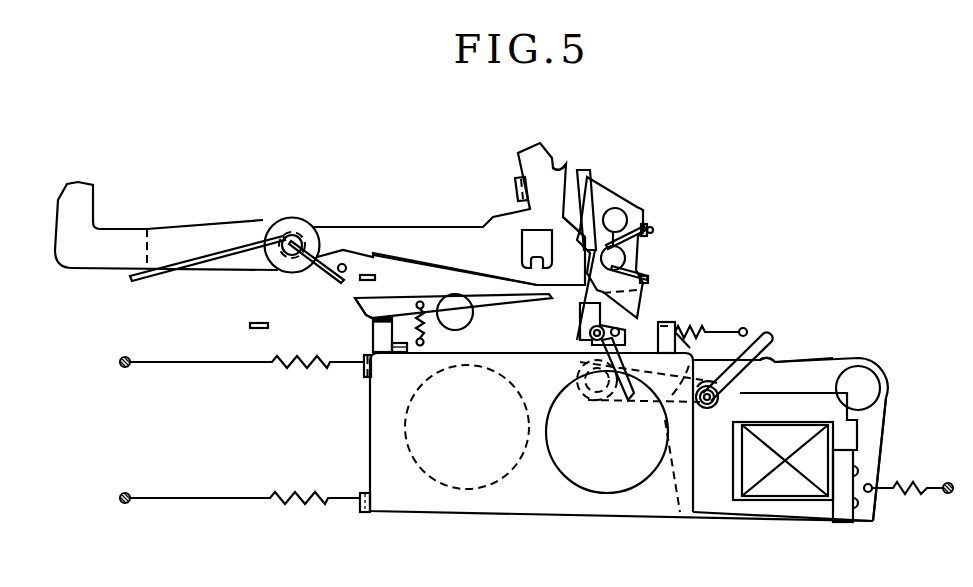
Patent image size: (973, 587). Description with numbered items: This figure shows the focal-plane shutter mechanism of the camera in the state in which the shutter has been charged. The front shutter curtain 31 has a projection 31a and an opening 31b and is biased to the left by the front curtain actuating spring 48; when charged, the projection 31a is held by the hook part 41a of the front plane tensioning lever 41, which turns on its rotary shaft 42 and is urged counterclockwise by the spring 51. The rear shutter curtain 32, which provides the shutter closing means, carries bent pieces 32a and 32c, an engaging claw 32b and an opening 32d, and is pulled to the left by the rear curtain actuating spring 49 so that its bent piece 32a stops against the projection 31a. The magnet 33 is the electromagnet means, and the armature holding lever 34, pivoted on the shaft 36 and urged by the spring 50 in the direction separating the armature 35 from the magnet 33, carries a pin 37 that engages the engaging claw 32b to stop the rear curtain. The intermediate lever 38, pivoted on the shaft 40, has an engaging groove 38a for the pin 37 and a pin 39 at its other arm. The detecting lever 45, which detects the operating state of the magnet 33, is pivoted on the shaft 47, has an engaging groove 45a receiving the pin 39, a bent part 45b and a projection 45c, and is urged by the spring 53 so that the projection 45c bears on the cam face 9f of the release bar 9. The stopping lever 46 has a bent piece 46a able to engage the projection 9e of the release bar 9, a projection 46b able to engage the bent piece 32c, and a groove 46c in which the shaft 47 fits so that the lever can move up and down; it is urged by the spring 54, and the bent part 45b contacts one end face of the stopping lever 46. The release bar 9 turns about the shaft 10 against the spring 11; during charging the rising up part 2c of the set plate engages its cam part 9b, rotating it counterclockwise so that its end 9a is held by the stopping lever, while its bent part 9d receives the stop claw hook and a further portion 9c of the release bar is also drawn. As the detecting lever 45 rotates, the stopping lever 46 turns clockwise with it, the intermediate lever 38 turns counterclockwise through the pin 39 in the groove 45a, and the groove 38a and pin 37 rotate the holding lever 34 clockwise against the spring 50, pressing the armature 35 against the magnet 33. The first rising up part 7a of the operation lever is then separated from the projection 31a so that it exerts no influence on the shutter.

The release bar 9 is at (320, 201).
The end of release bar 9a is at (67, 183).
The cam part of release bar 9b is at (403, 258).
The recess of lever 9c is at (522, 265).
The bent part of release bar 9d is at (515, 189).
The projection of release bar 9e is at (563, 165).
The cam face of release bar 9f is at (563, 217).
The shaft 10 is at (291, 218).
The spring 11 is at (188, 265).
The rising up part of set plate 2c is at (370, 274).
The first rising up part of operation lever 7a is at (258, 322).
The front shutter curtain 31 is at (602, 450).
The projection of front shutter curtain 31a is at (373, 338).
The opening of front shutter curtain 31b is at (604, 496).
The rear shutter curtain 32 is at (792, 391).
The bent piece of rear shutter curtain 32a is at (366, 378).
The engaging claw of rear shutter curtain 32b is at (760, 384).
The bent piece of rear shutter curtain 32c is at (677, 320).
The opening of rear shutter curtain 32d is at (485, 490).
The magnet 33 is at (780, 492).
The armature holding lever 34 is at (880, 420).
The armature 35 is at (843, 520).
The shaft 36 is at (882, 380).
The pin 37 is at (775, 358).
The intermediate lever 38 is at (738, 385).
The engaging groove of intermediate lever 38a is at (708, 410).
The pin of intermediate lever 39 is at (590, 343).
The shaft 40 is at (585, 384).
The front plane tensioning lever 41 is at (423, 319).
The hook part of tensioning lever 41a is at (367, 317).
The rotary shaft 42 is at (463, 320).
The detecting lever 45 is at (614, 402).
The engaging groove of detecting lever 45a is at (627, 392).
The bent part of detecting lever 45b is at (650, 279).
The projection of detecting lever 45c is at (604, 214).
The stopping lever 46 is at (647, 225).
The bent piece of stopping lever 46a is at (580, 172).
The projection of stopping lever 46b is at (657, 297).
The groove of stopping lever 46c is at (648, 232).
The shaft 47 is at (626, 257).
The front curtain actuating spring 48 is at (296, 369).
The rear curtain actuating spring 49 is at (292, 503).
The spring 50 is at (910, 493).
The spring 51 is at (418, 302).
The spring 53 is at (717, 322).
The spring 54 is at (653, 231).